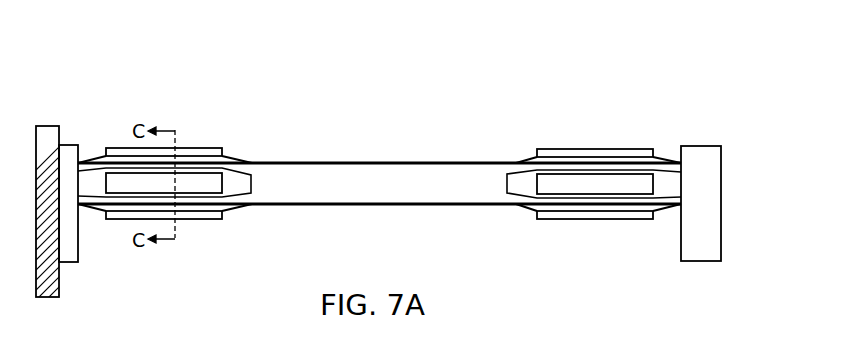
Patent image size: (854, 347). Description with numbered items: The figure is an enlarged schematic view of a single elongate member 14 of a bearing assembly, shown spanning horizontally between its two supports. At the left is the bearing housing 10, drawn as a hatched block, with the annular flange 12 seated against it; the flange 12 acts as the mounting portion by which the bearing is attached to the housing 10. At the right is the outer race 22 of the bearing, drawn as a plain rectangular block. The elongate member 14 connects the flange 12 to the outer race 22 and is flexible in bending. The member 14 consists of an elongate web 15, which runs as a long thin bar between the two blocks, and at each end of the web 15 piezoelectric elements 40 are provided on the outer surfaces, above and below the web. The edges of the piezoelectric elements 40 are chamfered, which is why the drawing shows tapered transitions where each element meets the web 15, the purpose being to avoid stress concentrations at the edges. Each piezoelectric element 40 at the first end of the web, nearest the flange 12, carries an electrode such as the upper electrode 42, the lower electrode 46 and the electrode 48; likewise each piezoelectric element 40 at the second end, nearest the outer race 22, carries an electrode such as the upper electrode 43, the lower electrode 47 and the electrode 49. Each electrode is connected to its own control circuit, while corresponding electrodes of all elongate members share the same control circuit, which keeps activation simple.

The bearing housing 10 is at (50, 125).
The annular flange 12 is at (75, 148).
The elongate member 14 is at (392, 90).
The elongate web 15 is at (360, 180).
The outer race 22 is at (704, 155).
The piezoelectric element 40 is at (248, 170).
The electrode 42 is at (197, 148).
The electrode 43 is at (573, 148).
The electrode 46 is at (197, 222).
The electrode 47 is at (610, 220).
The electrode 48 is at (132, 192).
The electrode 49 is at (590, 185).